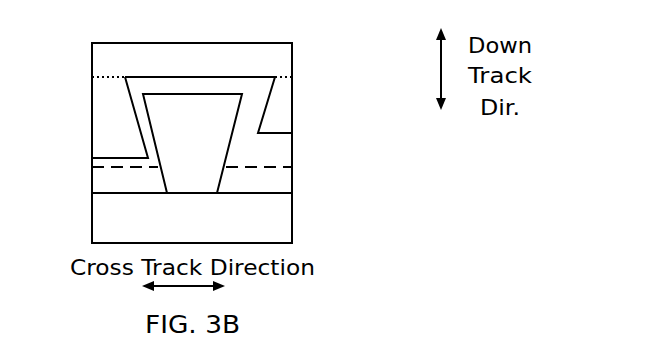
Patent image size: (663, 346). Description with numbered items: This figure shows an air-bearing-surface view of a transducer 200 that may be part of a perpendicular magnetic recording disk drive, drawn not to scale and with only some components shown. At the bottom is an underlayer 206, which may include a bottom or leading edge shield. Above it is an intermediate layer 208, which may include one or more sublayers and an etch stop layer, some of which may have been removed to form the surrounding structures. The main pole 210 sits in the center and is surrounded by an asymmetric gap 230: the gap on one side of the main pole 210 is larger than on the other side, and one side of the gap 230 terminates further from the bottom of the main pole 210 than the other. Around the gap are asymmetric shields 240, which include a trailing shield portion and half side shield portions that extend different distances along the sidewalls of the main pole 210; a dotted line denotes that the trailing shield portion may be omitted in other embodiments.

The transducer 200 is at (213, 22).
The asymmetric shields 240 is at (92, 110).
The main pole 210 is at (192, 143).
The underlayer 206 is at (192, 213).
The intermediate layer 208 is at (84, 179).
The asymmetric gap 230 is at (250, 134).